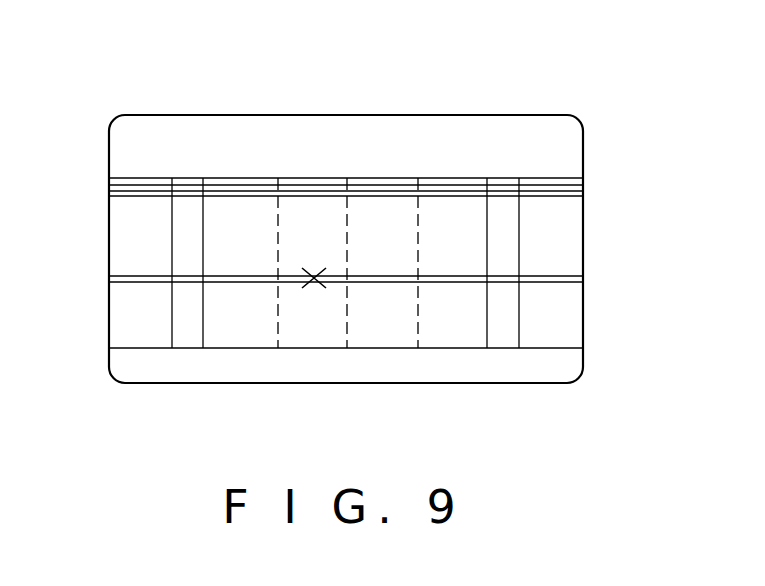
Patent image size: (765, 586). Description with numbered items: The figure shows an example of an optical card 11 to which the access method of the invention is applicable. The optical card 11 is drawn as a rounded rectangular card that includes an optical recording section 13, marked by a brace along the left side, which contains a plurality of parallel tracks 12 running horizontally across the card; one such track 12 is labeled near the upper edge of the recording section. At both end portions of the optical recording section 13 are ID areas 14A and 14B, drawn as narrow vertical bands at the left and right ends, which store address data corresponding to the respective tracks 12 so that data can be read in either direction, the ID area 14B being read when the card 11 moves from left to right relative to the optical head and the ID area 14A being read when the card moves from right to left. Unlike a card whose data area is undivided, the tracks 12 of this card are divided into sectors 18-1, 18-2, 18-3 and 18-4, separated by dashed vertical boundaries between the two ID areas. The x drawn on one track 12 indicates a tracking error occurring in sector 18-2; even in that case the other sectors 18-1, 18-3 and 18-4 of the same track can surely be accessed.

The optical card 11 is at (486, 114).
The track 12 is at (563, 179).
The optical recording section 13 is at (98, 180).
The ID area 14A is at (192, 328).
The ID area 14B is at (508, 329).
The sector 18-1 is at (247, 329).
The sector 18-2 is at (317, 329).
The sector 18-3 is at (390, 329).
The sector 18-4 is at (455, 329).